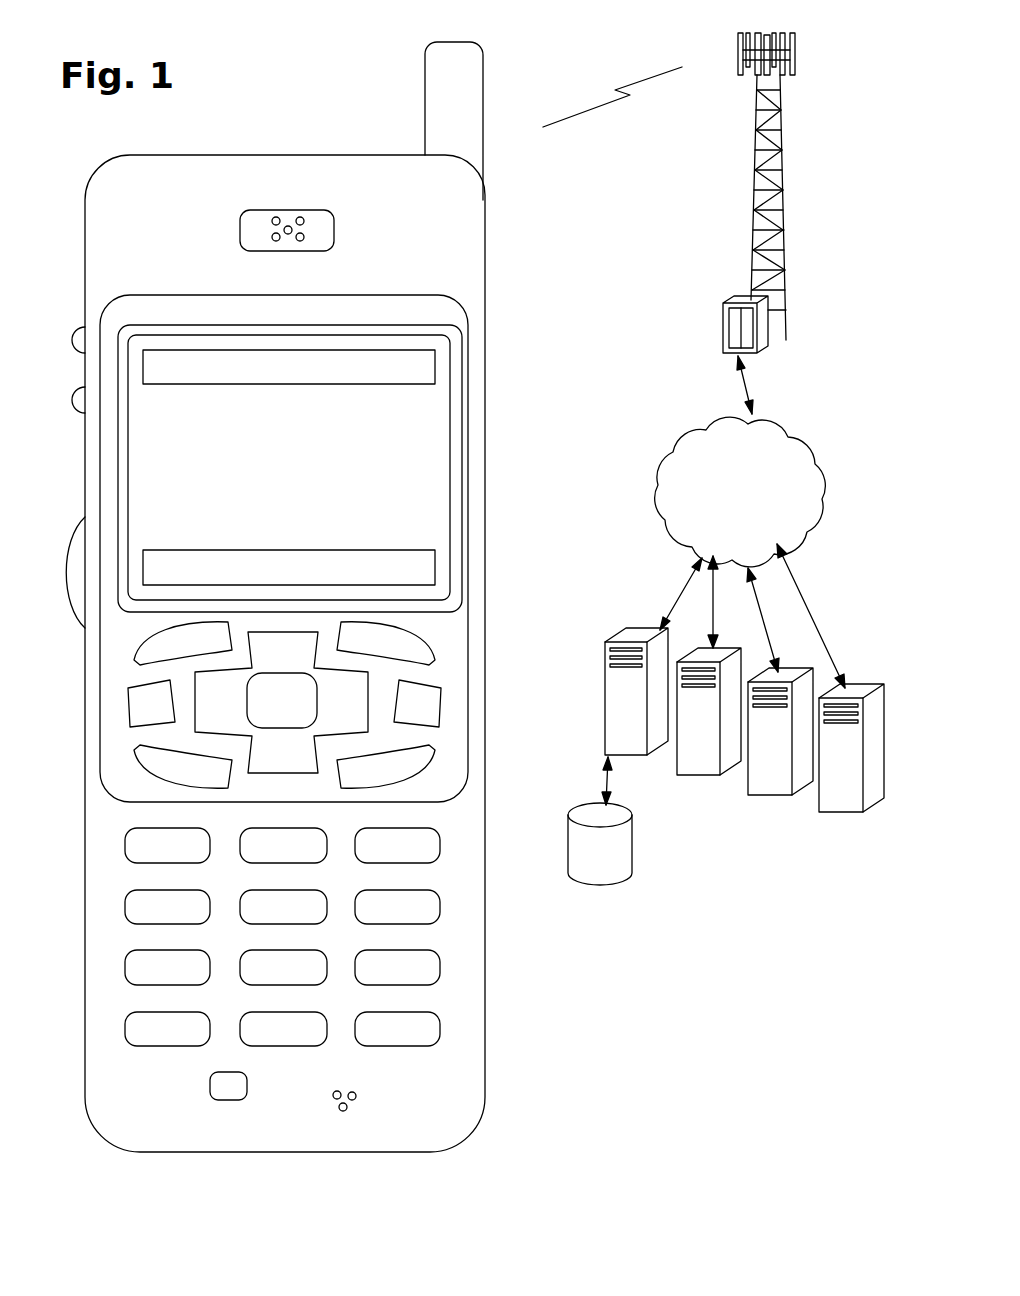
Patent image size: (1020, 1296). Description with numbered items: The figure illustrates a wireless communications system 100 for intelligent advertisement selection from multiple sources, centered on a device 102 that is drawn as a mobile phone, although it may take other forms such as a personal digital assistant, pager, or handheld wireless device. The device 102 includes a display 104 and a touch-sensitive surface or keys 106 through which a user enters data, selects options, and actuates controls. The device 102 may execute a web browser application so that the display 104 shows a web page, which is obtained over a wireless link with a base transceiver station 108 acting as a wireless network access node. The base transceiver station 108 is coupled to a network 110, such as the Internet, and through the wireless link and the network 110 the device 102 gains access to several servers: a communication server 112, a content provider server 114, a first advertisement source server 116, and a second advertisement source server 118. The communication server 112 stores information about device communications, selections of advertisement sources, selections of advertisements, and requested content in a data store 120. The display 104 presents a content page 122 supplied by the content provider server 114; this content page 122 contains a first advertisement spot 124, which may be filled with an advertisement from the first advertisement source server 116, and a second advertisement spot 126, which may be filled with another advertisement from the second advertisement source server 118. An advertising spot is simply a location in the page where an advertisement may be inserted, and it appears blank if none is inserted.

The wireless communications system 100 is at (270, 90).
The device 102 is at (136, 1152).
The display 104 is at (458, 340).
The keys 106 is at (496, 621).
The base transceiver station 108 is at (752, 206).
The network 110 is at (672, 542).
The communication server 112 is at (655, 747).
The content provider server 114 is at (712, 784).
The first advertisement source server 116 is at (790, 800).
The second advertisement source server 118 is at (842, 816).
The data store 120 is at (612, 876).
The content page 122 is at (450, 450).
The first advertisement spot 124 is at (436, 378).
The second advertisement spot 126 is at (436, 580).